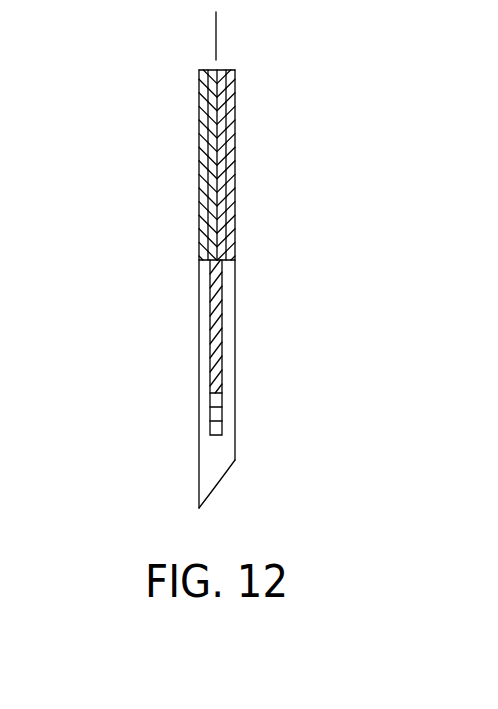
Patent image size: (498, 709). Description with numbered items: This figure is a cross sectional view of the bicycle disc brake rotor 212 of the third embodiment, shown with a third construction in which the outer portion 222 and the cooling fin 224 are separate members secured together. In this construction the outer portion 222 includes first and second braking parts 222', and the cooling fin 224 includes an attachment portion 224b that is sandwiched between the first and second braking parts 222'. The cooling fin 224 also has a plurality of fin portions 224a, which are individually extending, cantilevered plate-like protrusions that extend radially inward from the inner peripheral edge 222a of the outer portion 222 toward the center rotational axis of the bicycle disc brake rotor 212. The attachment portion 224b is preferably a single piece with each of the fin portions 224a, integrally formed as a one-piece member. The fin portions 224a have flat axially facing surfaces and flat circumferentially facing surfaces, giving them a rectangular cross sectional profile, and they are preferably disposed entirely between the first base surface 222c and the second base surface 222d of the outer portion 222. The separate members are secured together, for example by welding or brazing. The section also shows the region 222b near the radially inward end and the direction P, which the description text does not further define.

The proximal direction P is at (217, 25).
The bicycle disc brake rotor 212 is at (143, 173).
The outer portion 222 is at (263, 289).
The first and second braking parts 222' is at (174, 102).
The inner peripheral edge 222a is at (227, 259).
The beveled distal tip of cannula 222b is at (212, 462).
The first base surface 222c is at (200, 208).
The second base surface 222d is at (235, 145).
The cooling fin 224 is at (218, 348).
The fin portions 224a is at (215, 318).
The attachment portion 224b is at (218, 220).